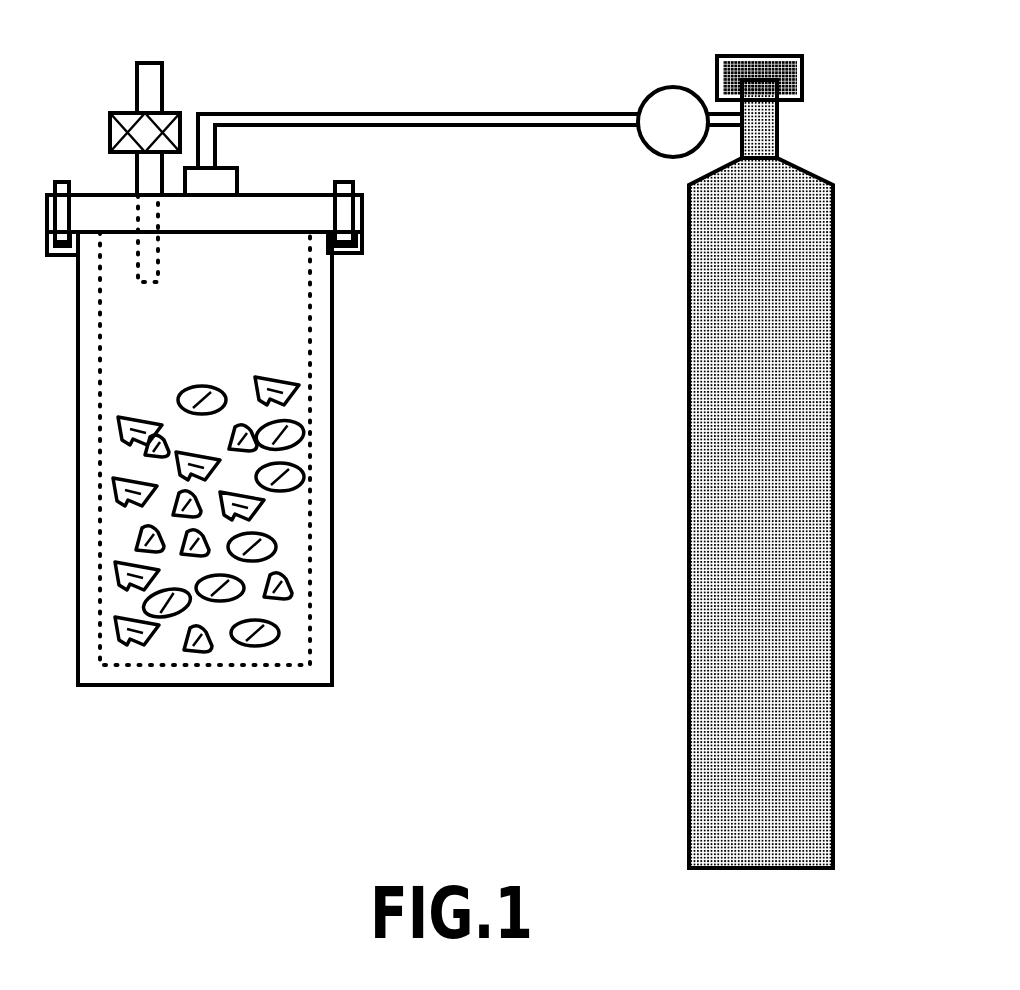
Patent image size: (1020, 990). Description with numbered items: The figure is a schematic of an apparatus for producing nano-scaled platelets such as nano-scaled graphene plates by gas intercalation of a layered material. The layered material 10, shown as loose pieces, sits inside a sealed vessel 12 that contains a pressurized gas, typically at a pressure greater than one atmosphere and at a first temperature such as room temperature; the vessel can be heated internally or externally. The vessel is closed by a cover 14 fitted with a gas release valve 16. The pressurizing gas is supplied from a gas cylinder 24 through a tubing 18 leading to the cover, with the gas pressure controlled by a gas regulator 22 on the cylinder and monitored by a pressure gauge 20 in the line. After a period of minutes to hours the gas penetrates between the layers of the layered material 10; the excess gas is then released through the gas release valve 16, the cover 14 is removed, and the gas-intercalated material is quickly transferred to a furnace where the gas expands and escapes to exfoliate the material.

The layered material 10 is at (283, 590).
The sealed vessel 12 is at (178, 675).
The cover 14 is at (323, 207).
The gas release valve 16 is at (110, 125).
The tubing 18 is at (263, 112).
The pressure gauge 20 is at (667, 88).
The gas regulator 22 is at (770, 57).
The gas cylinder 24 is at (688, 470).